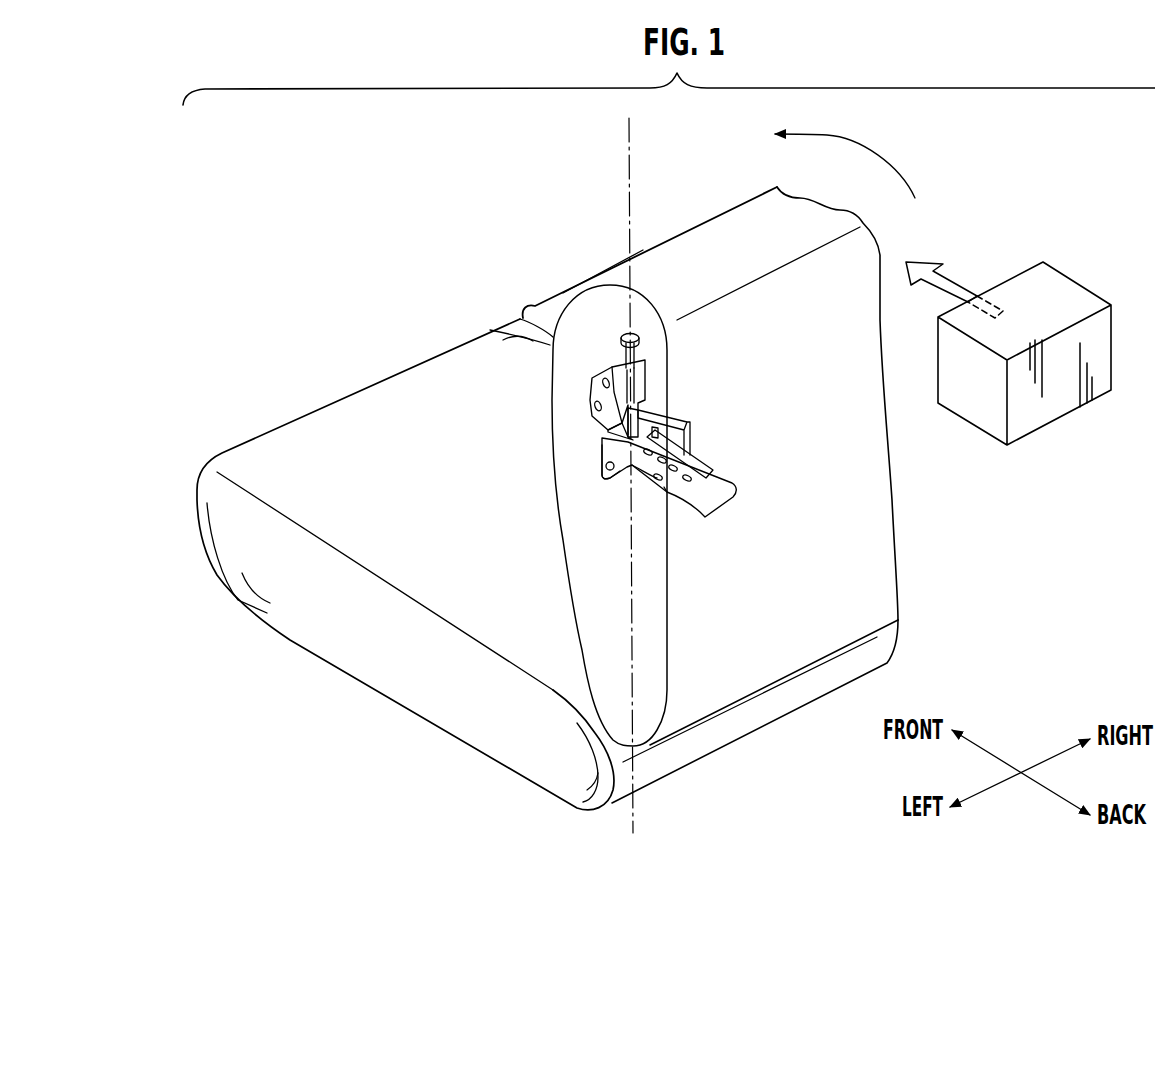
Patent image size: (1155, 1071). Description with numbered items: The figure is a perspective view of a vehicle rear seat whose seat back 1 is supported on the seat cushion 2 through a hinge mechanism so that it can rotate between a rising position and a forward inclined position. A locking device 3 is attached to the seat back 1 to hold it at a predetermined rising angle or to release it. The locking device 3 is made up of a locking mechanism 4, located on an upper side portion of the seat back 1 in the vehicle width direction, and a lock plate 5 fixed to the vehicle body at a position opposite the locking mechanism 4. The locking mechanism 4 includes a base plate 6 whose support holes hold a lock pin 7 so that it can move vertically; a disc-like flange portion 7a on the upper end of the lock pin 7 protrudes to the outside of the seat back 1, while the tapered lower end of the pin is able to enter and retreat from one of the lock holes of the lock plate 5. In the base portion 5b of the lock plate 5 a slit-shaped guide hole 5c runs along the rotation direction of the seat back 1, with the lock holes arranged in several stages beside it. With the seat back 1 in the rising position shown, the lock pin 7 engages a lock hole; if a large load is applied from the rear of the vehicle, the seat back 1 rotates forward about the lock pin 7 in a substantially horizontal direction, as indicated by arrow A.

The seat back 1 is at (664, 239).
The seat cushion 2 is at (315, 426).
The locking device 3 is at (600, 478).
The locking mechanism 4 is at (610, 360).
The lock plate 5 is at (660, 498).
The base portion 5b is at (688, 484).
The guide hole 5c is at (708, 456).
The base plate 6 is at (607, 422).
The lock pin 7 is at (680, 359).
The flange portion 7a is at (641, 337).
The arrow A is at (890, 157).